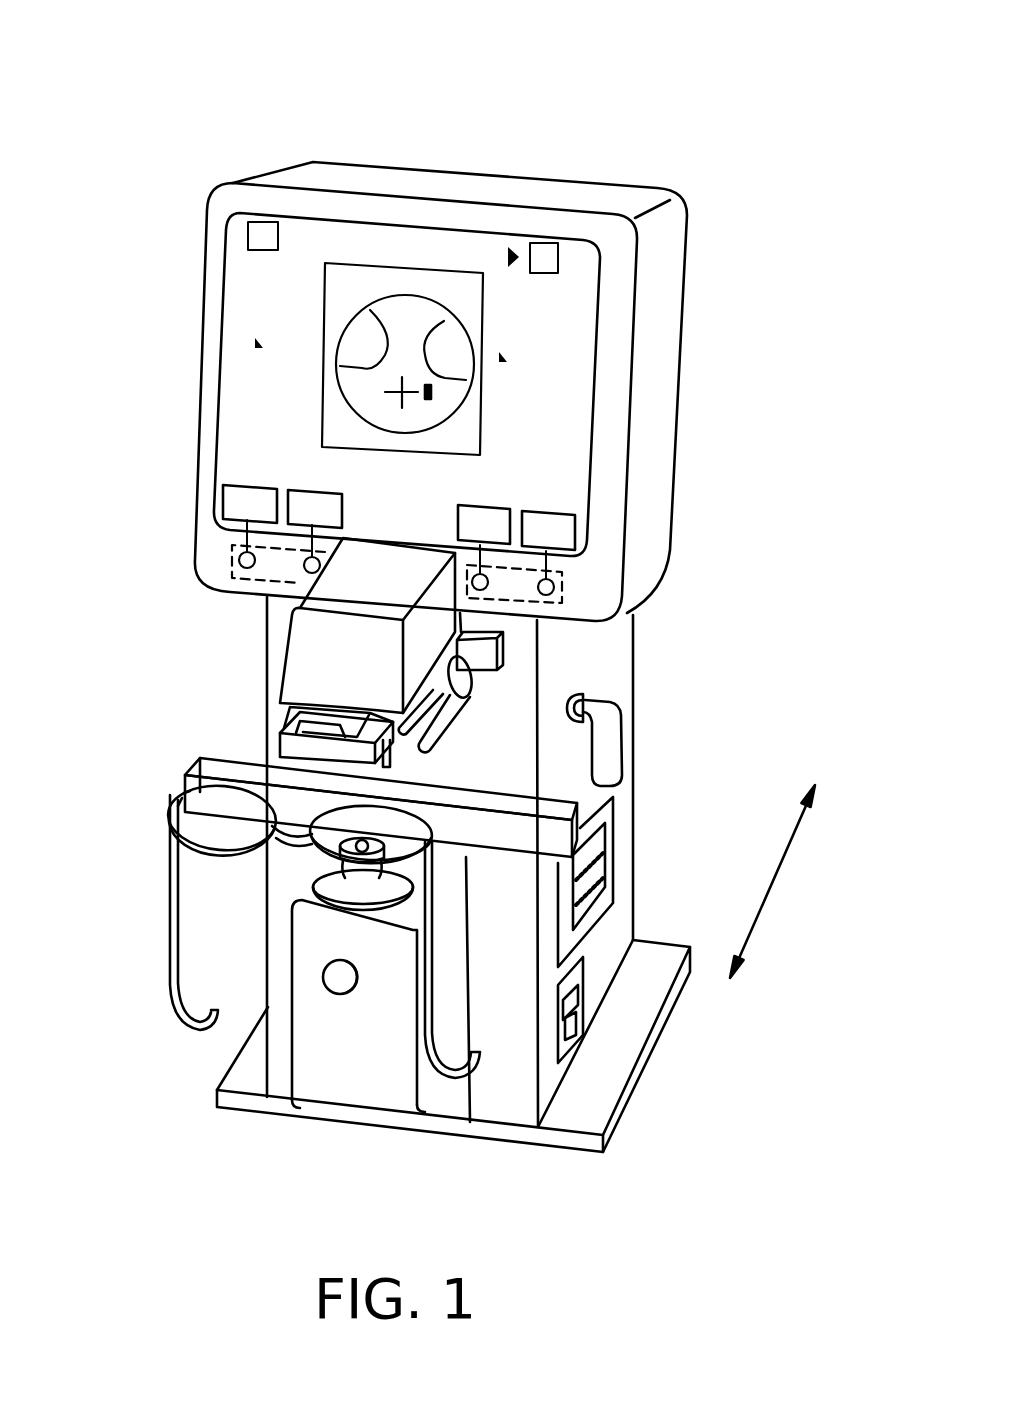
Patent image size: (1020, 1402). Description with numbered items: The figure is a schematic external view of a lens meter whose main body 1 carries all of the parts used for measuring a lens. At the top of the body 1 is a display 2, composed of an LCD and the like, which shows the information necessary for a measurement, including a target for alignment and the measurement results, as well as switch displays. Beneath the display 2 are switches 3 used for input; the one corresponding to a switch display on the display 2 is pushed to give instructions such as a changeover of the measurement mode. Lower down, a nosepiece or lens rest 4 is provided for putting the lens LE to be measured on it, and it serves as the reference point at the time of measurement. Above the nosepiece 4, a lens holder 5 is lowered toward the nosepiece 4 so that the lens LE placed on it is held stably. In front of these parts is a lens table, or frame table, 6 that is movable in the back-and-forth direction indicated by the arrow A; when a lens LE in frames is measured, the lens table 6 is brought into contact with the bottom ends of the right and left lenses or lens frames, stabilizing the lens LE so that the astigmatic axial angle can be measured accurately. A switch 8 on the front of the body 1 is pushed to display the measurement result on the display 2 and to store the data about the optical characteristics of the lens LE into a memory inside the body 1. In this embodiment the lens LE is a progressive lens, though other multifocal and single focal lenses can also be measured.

The main body 1 is at (577, 146).
The display 2 is at (248, 443).
The switches 3 is at (228, 563).
The nosepiece (lens rest) 4 is at (332, 880).
The lens holder 5 is at (283, 723).
The lens table (frame table) 6 is at (197, 770).
The switch 8 is at (338, 980).
The lens LE is at (390, 822).
The arrow (back-and-forth direction) A is at (776, 881).